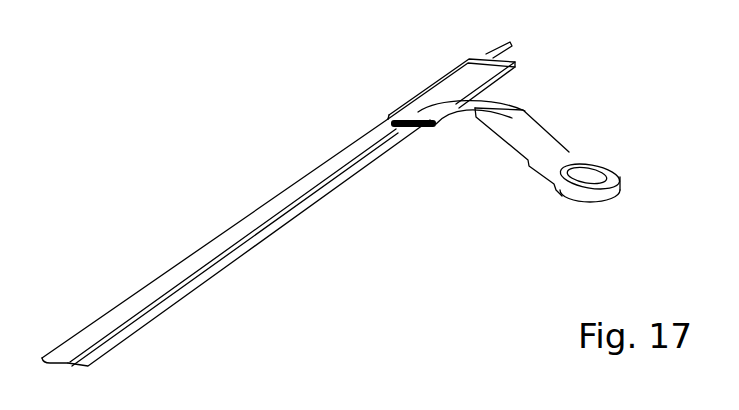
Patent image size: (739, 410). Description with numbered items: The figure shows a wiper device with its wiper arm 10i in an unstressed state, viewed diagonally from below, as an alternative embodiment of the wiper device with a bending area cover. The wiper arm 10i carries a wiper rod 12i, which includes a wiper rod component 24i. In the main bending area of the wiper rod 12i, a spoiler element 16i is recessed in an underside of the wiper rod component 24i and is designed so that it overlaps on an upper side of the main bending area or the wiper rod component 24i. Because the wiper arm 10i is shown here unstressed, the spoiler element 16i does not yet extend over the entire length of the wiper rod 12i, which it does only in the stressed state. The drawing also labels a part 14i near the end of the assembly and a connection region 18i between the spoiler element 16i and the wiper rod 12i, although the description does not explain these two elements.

The wiper arm 10i is at (367, 115).
The wiper rod 12i is at (503, 91).
The tongue with eyelet 14i is at (568, 154).
The spoiler element 16i is at (266, 199).
The connection between plate and bar 18i is at (386, 136).
The wiper rod component 24i is at (477, 108).